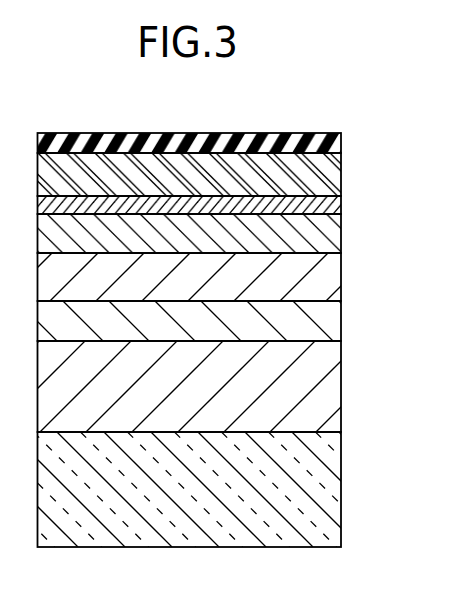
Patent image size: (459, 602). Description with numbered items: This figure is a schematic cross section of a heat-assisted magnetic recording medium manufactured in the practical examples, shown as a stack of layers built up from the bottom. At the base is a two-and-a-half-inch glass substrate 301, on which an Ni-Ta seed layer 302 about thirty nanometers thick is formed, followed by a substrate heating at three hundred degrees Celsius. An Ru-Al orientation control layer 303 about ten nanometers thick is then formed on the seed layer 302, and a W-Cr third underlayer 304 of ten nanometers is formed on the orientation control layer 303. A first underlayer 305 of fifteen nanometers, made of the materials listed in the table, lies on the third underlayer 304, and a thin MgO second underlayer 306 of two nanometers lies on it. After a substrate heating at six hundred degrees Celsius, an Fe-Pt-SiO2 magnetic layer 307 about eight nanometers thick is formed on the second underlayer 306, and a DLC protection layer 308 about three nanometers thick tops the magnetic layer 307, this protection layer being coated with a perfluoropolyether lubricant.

The glass substrate 301 is at (341, 490).
The seed layer 302 is at (341, 387).
The orientation control layer 303 is at (341, 321).
The third underlayer 304 is at (341, 282).
The first underlayer 305 is at (341, 235).
The second underlayer 306 is at (341, 204).
The magnetic layer 307 is at (341, 175).
The DLC protection layer 308 is at (341, 143).